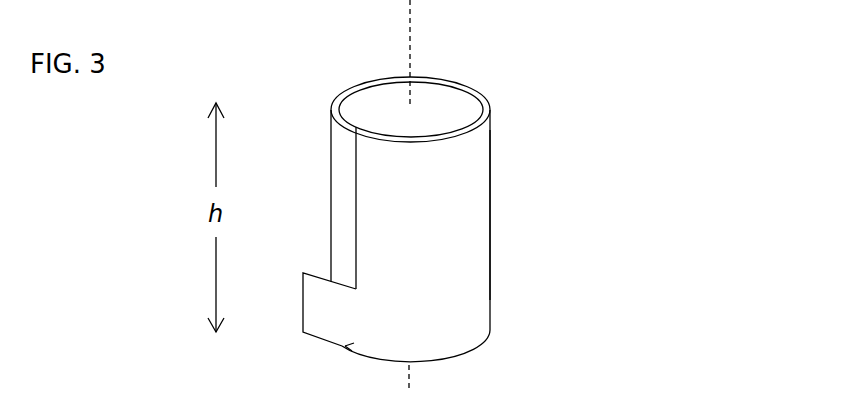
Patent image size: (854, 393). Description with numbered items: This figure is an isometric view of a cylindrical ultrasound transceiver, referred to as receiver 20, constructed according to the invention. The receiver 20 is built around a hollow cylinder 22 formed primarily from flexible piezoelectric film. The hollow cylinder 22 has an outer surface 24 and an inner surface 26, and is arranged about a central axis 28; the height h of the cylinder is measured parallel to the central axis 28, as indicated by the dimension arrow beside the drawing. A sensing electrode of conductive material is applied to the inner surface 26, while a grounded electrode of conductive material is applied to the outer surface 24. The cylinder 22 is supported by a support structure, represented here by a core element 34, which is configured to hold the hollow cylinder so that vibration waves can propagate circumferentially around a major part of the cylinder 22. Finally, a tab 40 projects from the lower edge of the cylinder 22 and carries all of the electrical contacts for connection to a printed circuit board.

The receiver 20 is at (620, 69).
The hollow cylinder 22 is at (485, 236).
The outer surface 24 is at (466, 204).
The inner surface 26 is at (480, 115).
The central axis 28 is at (469, 195).
The core element 34 is at (459, 100).
The tab 40 is at (291, 333).